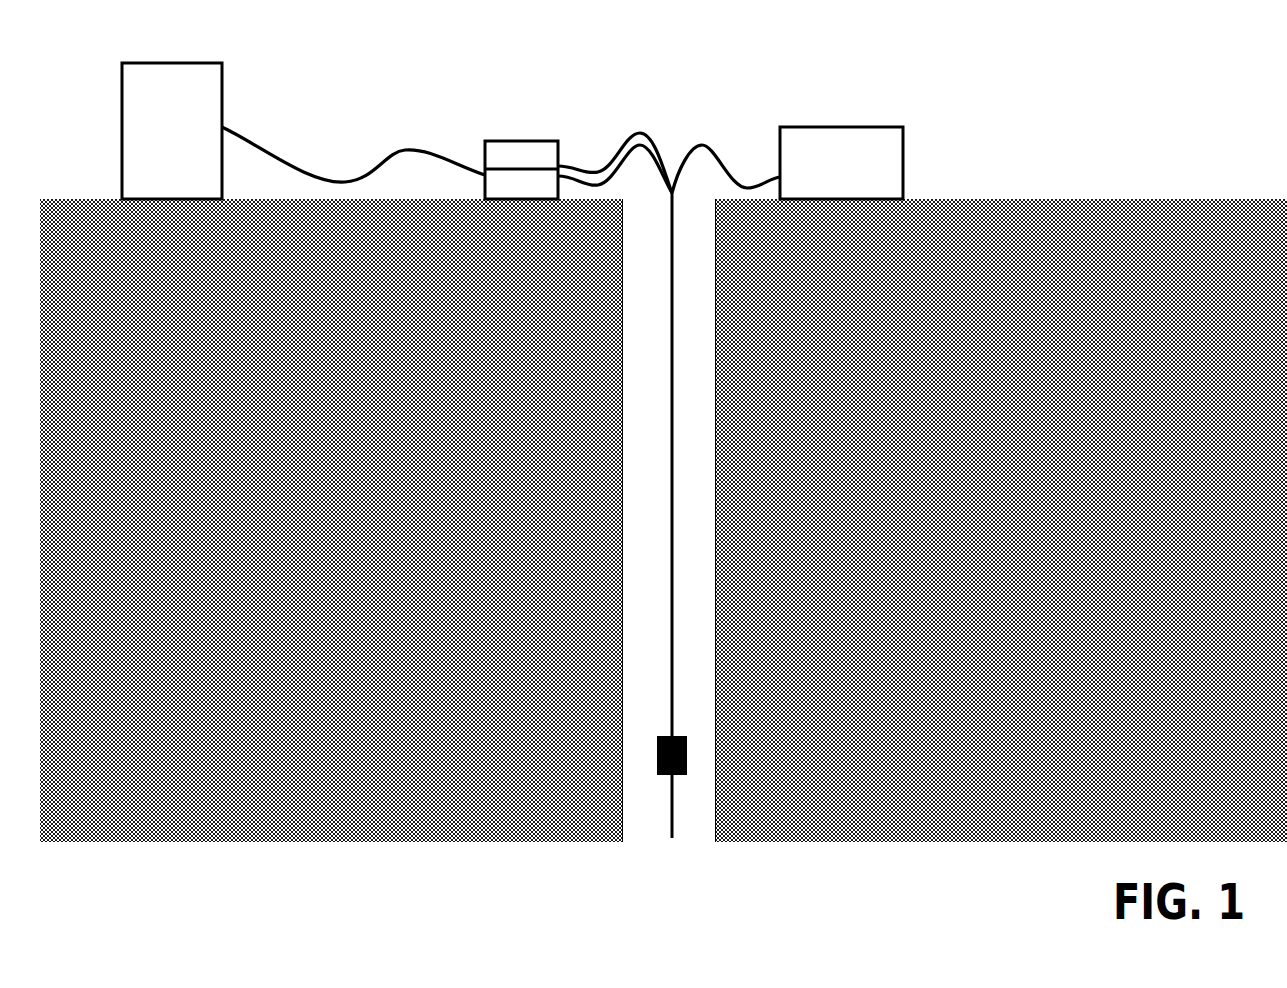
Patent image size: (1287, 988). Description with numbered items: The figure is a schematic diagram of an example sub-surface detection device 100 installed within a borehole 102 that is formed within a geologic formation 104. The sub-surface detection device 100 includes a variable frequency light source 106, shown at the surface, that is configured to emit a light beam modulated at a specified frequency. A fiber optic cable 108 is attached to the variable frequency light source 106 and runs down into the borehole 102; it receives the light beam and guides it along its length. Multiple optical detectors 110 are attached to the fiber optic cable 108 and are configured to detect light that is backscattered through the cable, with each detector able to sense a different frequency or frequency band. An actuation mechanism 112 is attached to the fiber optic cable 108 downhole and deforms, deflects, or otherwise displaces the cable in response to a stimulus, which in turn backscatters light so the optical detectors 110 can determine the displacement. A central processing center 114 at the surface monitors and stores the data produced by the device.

The sub-surface detection device 100 is at (663, 430).
The borehole 102 is at (622, 565).
The geologic formation 104 is at (341, 382).
The variable frequency light source 106 is at (855, 126).
The fiber optic cable 108 is at (672, 430).
The optical detectors 110 is at (507, 116).
The actuation mechanism 112 is at (687, 750).
The central processing center 114 is at (122, 121).